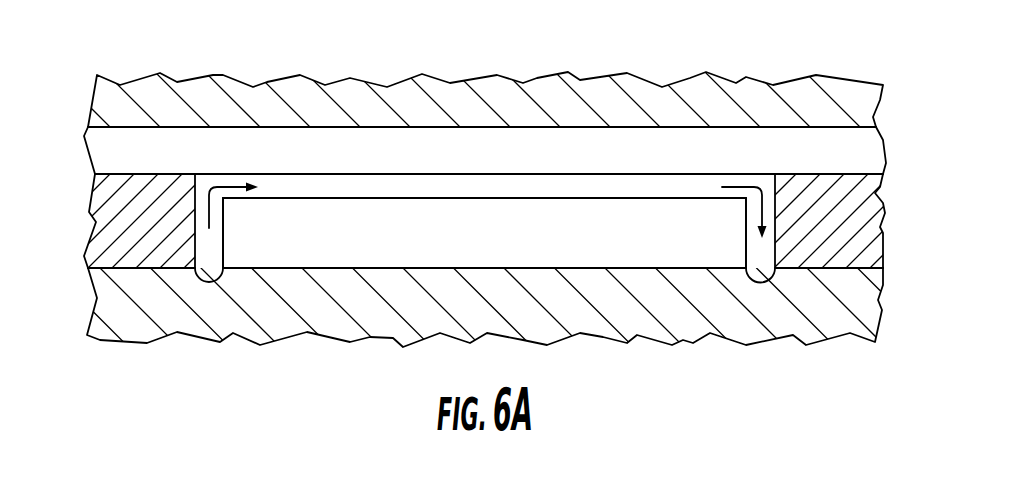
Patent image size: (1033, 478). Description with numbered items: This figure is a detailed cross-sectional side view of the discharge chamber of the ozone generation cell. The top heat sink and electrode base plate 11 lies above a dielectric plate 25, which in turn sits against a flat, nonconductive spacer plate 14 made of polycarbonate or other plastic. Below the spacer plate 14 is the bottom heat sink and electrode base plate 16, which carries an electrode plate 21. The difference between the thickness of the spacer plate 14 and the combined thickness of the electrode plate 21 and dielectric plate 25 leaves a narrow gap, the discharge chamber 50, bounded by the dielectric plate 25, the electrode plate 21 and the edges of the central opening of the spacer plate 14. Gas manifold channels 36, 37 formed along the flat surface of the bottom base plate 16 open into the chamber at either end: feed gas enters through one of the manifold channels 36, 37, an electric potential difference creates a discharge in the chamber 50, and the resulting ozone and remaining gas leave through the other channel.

The top heat sink and electrode base plate 11 is at (98, 95).
The dielectric plate 25 is at (872, 150).
The spacer plate 14 is at (98, 229).
The bottom heat sink and electrode base plate 16 is at (153, 310).
The electrode plate 21 is at (688, 232).
The gas manifold channel 36 is at (208, 272).
The gas manifold channel 37 is at (761, 272).
The discharge chamber 50 is at (539, 188).